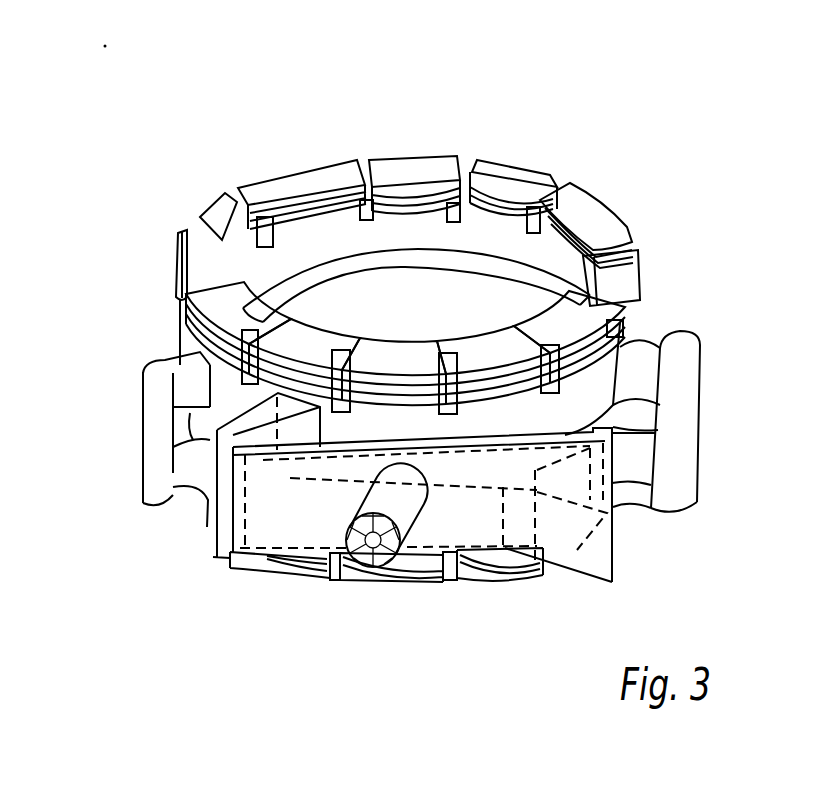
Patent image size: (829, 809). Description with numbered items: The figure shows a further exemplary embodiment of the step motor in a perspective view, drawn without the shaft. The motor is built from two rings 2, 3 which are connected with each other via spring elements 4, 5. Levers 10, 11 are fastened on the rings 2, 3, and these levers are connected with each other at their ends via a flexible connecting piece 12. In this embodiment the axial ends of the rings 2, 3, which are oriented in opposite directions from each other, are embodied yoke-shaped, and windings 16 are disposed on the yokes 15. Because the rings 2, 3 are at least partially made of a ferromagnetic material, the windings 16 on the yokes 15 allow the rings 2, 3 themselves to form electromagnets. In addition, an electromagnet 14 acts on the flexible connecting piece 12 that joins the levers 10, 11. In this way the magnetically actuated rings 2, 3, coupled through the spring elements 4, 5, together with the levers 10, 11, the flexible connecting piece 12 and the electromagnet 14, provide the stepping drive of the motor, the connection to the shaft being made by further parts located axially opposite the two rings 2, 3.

The ring 2 is at (255, 272).
The ring 3 is at (370, 305).
The spring element 4 is at (647, 385).
The spring element 5 is at (640, 483).
The lever 10 is at (560, 560).
The lever 11 is at (263, 418).
The flexible connecting piece 12 is at (273, 520).
The electromagnet 14 is at (365, 563).
The yoke 15 is at (417, 580).
The winding 16 is at (493, 570).